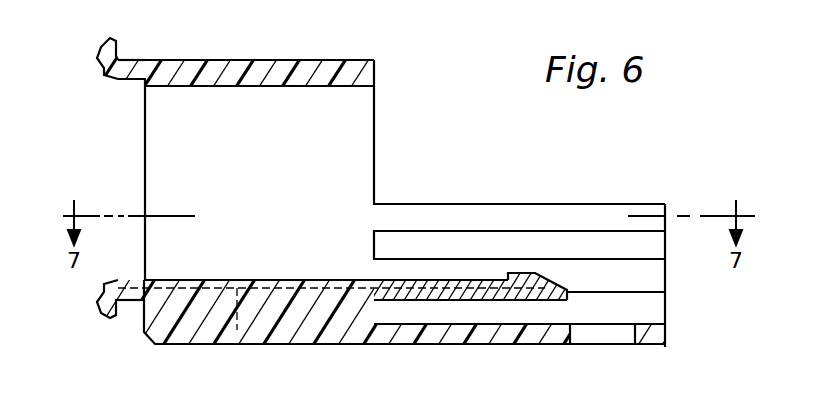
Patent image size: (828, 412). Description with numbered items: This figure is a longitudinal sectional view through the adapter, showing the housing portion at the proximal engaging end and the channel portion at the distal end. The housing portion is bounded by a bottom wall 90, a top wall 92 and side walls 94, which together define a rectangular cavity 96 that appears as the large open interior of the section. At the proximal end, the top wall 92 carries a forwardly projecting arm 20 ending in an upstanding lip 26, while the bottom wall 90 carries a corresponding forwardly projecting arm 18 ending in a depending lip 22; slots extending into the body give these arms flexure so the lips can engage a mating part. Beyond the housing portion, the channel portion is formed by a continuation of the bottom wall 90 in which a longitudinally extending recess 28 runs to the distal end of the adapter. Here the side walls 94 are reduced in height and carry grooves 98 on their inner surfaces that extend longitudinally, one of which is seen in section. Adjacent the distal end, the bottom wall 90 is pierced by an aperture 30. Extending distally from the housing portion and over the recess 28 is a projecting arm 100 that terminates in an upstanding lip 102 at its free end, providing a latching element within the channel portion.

The forwardly projecting arm 18 is at (131, 303).
The forwardly projecting arm 20 is at (122, 60).
The depending lip 22 is at (104, 306).
The upstanding lip 26 is at (102, 46).
The longitudinally extending recess 28 is at (646, 307).
The aperture 30 is at (612, 338).
The bottom wall 90 is at (290, 330).
The top wall 92 is at (310, 72).
The side walls 94 is at (258, 193).
The rectangular cavity 96 is at (312, 124).
The grooves 98 is at (610, 245).
The projecting arm 100 is at (478, 290).
The upstanding lip 102 is at (522, 276).